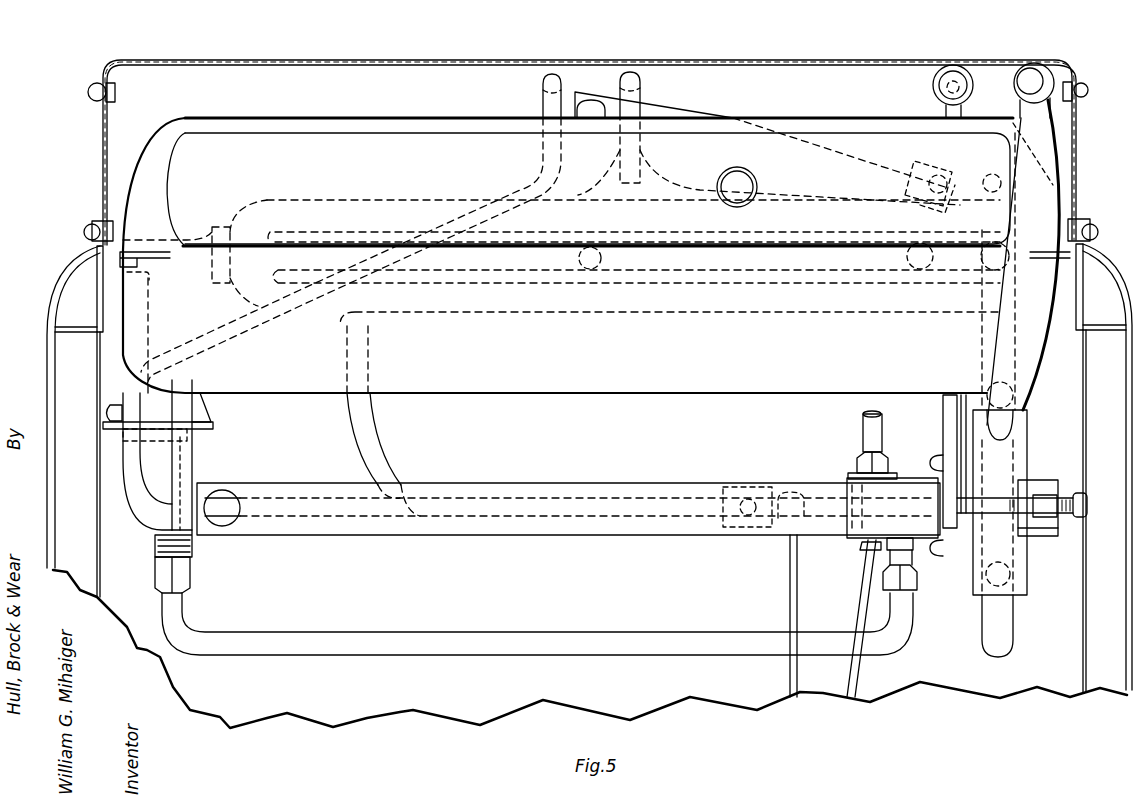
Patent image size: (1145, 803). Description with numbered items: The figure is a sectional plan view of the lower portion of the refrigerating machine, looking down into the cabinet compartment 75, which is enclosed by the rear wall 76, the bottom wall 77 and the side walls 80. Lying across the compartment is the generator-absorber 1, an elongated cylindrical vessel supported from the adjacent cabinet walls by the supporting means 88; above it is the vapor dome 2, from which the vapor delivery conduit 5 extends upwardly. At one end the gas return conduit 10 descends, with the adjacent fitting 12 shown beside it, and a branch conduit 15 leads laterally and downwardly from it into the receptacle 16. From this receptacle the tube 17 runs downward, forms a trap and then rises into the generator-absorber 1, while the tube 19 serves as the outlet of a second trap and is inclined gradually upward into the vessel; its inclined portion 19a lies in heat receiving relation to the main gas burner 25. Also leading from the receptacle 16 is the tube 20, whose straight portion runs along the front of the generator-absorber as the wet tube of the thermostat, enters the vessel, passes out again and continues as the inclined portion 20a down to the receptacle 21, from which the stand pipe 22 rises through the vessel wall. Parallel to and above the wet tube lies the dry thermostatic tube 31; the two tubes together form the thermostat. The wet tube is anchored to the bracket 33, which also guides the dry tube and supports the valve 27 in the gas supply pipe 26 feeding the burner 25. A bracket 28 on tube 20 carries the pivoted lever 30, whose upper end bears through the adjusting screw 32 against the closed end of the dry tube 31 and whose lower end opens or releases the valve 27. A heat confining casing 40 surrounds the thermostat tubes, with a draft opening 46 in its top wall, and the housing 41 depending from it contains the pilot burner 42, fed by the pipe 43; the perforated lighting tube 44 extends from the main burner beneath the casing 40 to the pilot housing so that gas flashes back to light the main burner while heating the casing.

The generator-absorber 1 is at (560, 324).
The vapor dome 2 is at (588, 189).
The vapor delivery conduit 5 is at (748, 176).
The gas return conduit 10 is at (1052, 70).
The knob 12 is at (933, 86).
The branch conduit 15 is at (1023, 328).
The receptacle 16 is at (1003, 451).
The tube 17 is at (906, 258).
The tube 19 is at (632, 200).
The inclined portion of tube 19 19a is at (642, 82).
The tube 20 is at (167, 508).
The inclined portion of tube 20 20a is at (348, 290).
The receptacle 21 is at (686, 118).
The stand pipe 22 is at (578, 258).
The gas burner 25 is at (633, 313).
The pipe 26 is at (866, 428).
The valve 27 is at (848, 478).
The bracket 28 is at (1045, 531).
The lever 30 is at (1047, 490).
The thermostatic element or tube 31 is at (232, 520).
The screw 32 is at (1082, 512).
The bracket 33 is at (943, 410).
The flue or casing 40 is at (581, 483).
The housing 41 is at (722, 487).
The pilot light or burner 42 is at (752, 490).
The pipe 43 is at (790, 567).
The lighting tube 44 is at (366, 437).
The opening 46 is at (230, 492).
The compartment 75 is at (465, 701).
The rear wall 76 is at (495, 60).
The bottom wall 77 is at (330, 718).
The side walls 80 is at (47, 353).
The supporting means 88 is at (118, 266).